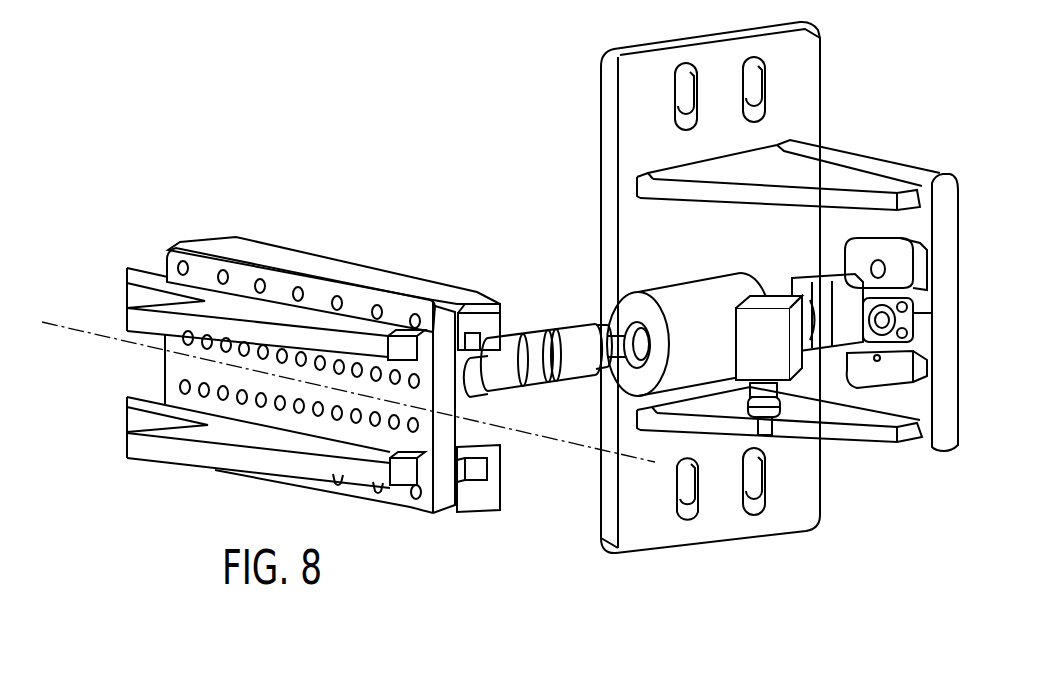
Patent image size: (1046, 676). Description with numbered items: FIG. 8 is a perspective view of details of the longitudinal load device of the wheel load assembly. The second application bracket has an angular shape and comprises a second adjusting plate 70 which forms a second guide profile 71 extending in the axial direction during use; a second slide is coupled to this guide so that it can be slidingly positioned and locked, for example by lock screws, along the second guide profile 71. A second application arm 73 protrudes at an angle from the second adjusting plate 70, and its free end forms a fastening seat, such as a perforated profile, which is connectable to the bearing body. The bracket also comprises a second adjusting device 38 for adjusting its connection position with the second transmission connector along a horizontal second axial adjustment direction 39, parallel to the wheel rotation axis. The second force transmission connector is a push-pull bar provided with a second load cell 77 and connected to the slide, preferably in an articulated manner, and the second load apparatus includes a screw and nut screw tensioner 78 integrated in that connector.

The second adjusting device 38 is at (357, 270).
The second axial adjustment direction 39 is at (75, 328).
The second adjusting plate 70 is at (292, 290).
The second guide profile 71 is at (405, 268).
The second application arm 73 is at (237, 315).
The second load cell 77 is at (735, 288).
The screw and nut screw tensioner 78 is at (548, 315).